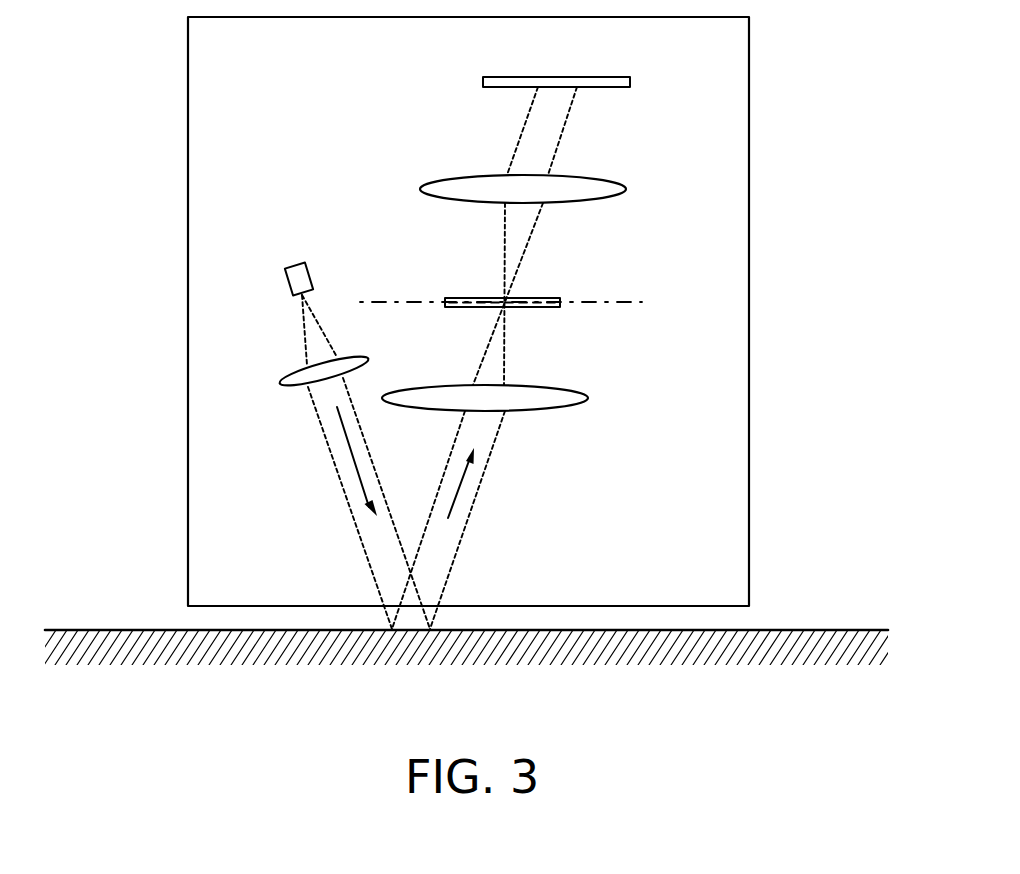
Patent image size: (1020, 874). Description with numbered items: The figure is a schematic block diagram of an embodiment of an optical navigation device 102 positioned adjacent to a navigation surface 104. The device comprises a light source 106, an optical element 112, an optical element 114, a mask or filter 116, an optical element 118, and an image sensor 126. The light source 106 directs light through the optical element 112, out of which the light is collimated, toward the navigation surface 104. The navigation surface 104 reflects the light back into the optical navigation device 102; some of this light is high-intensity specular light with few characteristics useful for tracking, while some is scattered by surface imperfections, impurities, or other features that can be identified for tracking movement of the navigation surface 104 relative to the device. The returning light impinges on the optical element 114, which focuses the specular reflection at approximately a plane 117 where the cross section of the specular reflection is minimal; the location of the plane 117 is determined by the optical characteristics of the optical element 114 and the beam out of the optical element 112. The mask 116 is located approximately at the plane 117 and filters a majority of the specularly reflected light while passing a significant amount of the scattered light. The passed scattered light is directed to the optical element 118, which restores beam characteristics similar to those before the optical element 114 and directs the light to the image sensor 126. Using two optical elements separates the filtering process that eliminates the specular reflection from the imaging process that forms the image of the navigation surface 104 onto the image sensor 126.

The optical navigation device 102 is at (188, 201).
The navigation surface 104 is at (809, 621).
The light source 106 is at (303, 265).
The optical element 112 is at (282, 385).
The optical element 114 is at (588, 398).
The mask 116 is at (467, 298).
The plane 117 is at (633, 302).
The optical element 118 is at (626, 189).
The image sensor 126 is at (630, 82).